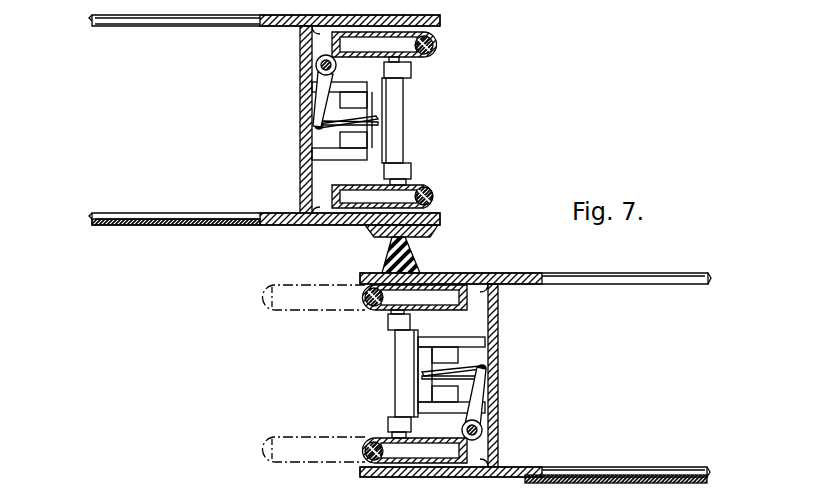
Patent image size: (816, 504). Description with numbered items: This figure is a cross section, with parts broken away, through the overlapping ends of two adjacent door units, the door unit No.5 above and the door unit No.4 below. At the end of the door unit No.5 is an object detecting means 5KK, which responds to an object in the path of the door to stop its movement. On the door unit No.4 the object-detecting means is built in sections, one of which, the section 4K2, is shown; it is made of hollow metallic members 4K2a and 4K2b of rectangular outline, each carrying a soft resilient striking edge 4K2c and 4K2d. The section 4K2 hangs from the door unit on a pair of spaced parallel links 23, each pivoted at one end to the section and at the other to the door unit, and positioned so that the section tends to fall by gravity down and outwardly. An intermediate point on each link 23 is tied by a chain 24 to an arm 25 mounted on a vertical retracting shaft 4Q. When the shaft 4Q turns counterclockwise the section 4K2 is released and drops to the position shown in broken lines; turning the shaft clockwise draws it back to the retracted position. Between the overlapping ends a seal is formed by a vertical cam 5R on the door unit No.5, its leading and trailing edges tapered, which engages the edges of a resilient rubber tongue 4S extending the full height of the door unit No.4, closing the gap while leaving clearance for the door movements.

The door unit No.5 is at (92, 17).
The object detecting means 5KK is at (433, 48).
The vertical cam 5R is at (372, 232).
The resilient tongue 4S is at (386, 268).
The door unit No.4 is at (708, 279).
The hollow metallic member 4K2a is at (437, 298).
The hollow metallic member 4K2b is at (418, 455).
The soft resilient striking edge 4K2c is at (373, 309).
The soft resilient striking edge 4K2d is at (372, 442).
The section of object-detecting means 4K2 is at (387, 314).
The link 23 is at (418, 330).
The chain 24 is at (462, 372).
The arm 25 is at (485, 388).
The vertical shaft 4Q is at (483, 431).